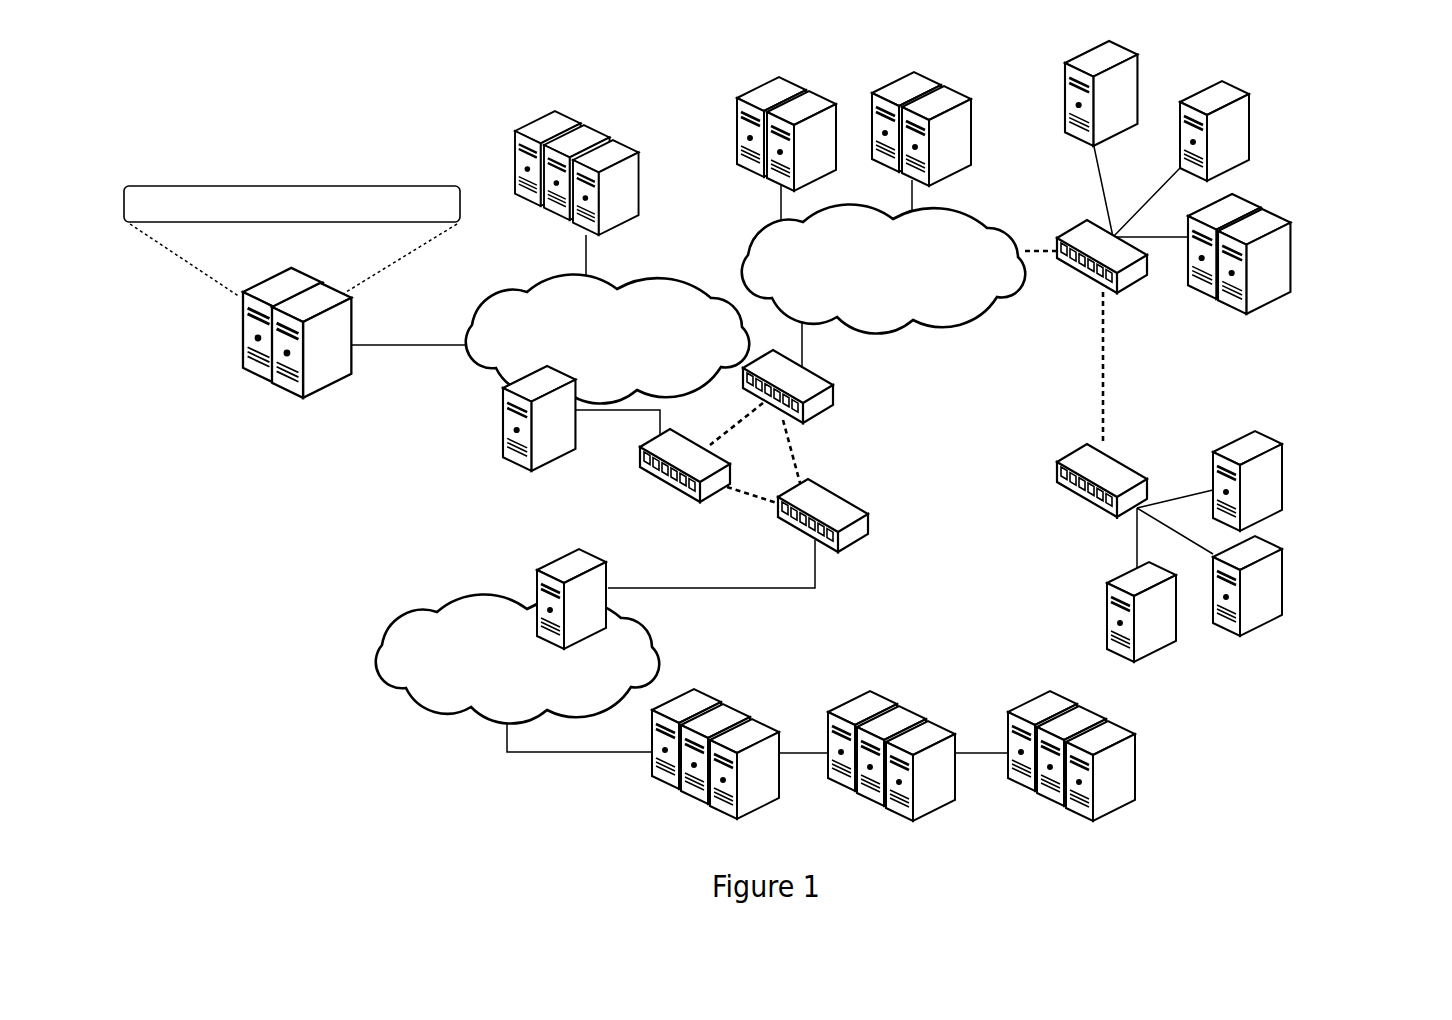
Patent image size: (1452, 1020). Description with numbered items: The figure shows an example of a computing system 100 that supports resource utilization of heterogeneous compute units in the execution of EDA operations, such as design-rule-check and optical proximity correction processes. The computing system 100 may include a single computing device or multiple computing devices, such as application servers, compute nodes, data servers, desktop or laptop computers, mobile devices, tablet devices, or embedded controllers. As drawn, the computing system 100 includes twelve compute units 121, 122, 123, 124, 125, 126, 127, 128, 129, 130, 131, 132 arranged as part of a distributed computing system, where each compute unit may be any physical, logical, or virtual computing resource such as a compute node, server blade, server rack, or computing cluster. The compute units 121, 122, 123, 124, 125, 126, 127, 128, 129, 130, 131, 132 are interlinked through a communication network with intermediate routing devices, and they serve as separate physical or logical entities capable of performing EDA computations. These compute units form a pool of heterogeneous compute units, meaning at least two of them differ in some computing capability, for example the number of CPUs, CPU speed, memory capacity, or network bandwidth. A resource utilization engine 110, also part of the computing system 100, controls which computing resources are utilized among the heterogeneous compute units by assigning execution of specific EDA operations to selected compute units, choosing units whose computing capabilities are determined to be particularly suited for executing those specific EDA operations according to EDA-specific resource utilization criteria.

The computing system 100 is at (270, 99).
The resource utilization engine 110 is at (292, 292).
The compute unit 121 is at (546, 116).
The compute unit 122 is at (742, 94).
The compute unit 123 is at (901, 77).
The compute unit 124 is at (1095, 49).
The compute unit 125 is at (1240, 158).
The compute unit 126 is at (1276, 294).
The compute unit 127 is at (1262, 518).
The compute unit 128 is at (1275, 617).
The compute unit 129 is at (1140, 652).
The compute unit 130 is at (730, 812).
The compute unit 131 is at (907, 812).
The compute unit 132 is at (1084, 812).